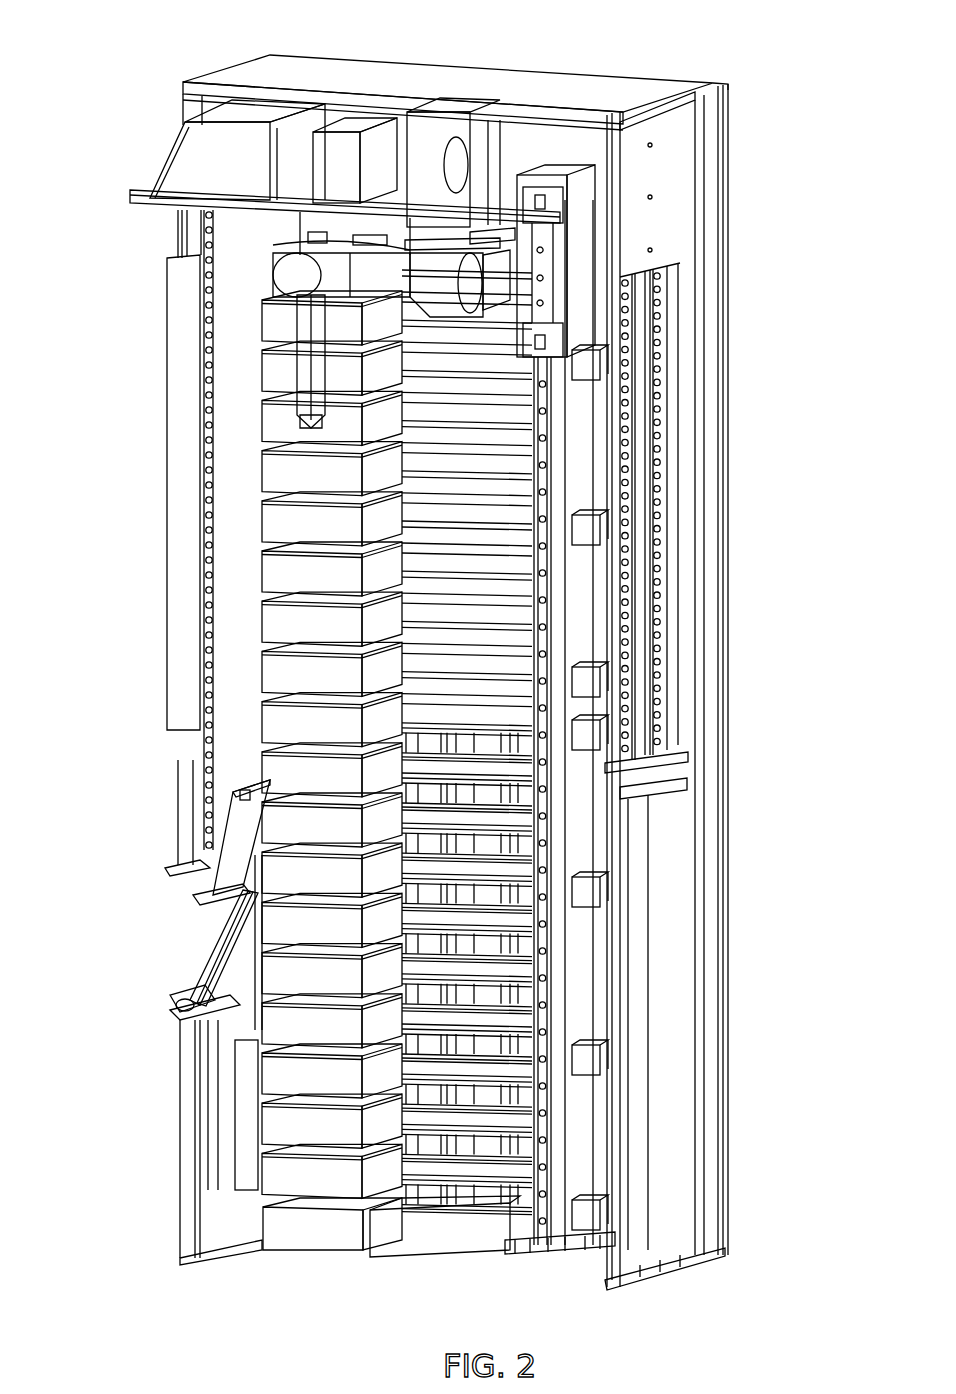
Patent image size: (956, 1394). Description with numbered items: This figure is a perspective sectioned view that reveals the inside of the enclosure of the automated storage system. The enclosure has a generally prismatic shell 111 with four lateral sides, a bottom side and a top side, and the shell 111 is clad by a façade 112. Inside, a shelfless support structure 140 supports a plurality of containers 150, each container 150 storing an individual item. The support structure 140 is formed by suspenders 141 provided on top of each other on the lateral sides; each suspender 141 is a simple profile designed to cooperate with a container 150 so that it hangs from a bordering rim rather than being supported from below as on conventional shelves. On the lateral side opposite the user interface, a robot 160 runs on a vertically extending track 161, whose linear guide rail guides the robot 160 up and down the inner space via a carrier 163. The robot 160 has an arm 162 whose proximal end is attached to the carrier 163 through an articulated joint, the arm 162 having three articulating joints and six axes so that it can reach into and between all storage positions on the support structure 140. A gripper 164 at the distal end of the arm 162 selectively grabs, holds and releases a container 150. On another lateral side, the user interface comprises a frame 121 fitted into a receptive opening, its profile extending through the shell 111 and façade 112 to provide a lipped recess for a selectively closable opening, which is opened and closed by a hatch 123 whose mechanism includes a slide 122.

The shell 111 is at (220, 565).
The façade 112 is at (182, 628).
The frame 121 is at (220, 950).
The hinge roller 122 is at (200, 1010).
The hatch 123 is at (218, 877).
The shelfless support structure 140 is at (475, 865).
The suspenders 141 is at (500, 967).
The container 150 is at (310, 1240).
The robot 160 is at (447, 300).
The track 161 is at (550, 1252).
The arm 162 is at (428, 250).
The carrier 163 is at (528, 190).
The gripper 164 is at (303, 380).